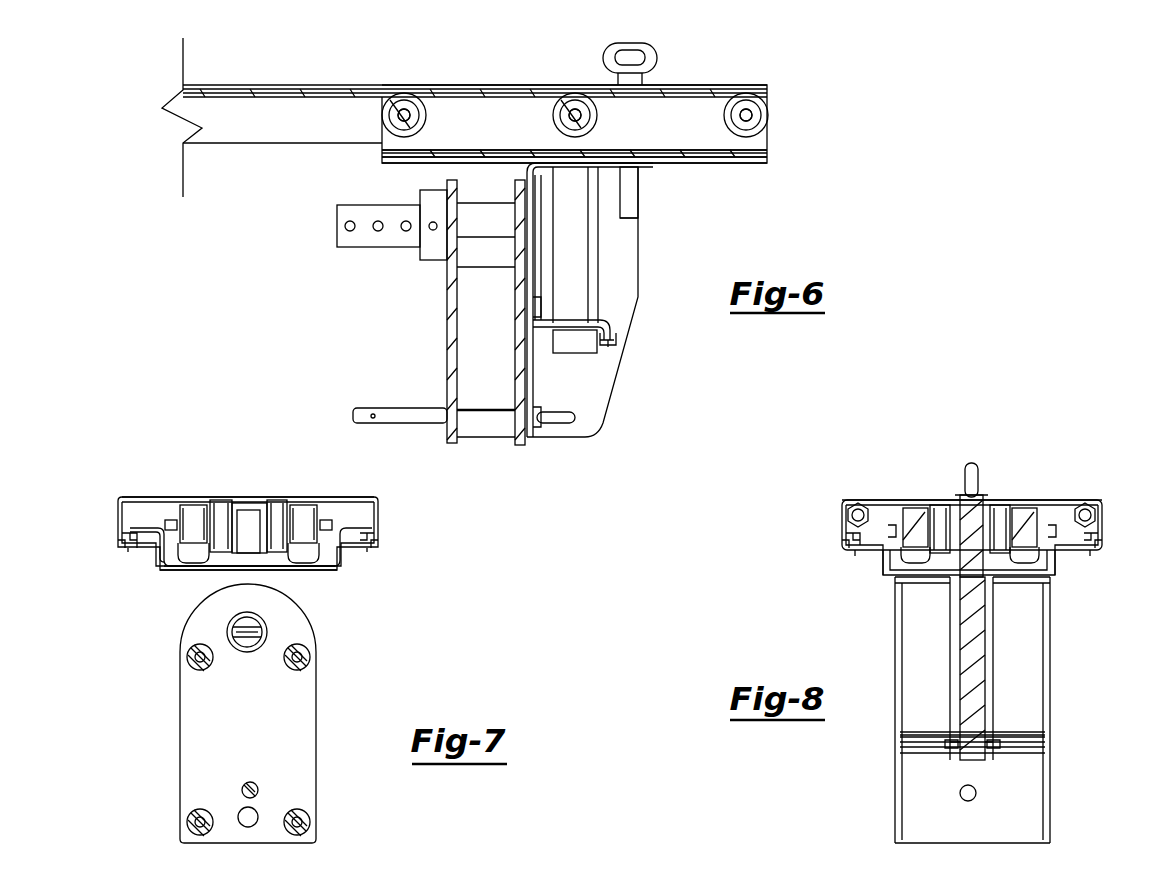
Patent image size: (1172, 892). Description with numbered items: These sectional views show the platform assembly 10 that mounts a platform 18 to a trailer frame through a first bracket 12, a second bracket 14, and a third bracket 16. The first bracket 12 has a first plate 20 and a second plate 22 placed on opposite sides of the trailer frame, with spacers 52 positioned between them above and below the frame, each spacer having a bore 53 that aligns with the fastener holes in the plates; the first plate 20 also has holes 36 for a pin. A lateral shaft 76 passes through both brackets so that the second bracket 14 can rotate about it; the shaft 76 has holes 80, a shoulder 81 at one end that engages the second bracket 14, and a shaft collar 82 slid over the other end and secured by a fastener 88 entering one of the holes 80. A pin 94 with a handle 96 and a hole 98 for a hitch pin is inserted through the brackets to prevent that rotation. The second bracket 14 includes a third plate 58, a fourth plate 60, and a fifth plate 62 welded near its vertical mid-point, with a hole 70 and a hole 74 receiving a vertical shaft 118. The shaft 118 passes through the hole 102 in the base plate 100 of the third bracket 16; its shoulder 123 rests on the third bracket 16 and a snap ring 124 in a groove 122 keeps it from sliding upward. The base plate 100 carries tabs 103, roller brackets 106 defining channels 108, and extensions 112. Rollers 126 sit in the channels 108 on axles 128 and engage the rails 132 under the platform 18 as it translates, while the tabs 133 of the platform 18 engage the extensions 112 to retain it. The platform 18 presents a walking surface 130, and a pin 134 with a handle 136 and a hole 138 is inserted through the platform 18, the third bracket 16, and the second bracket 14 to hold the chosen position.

In FIG. 6, the platform assembly 10 is at (485, 65).
In FIG. 7, the platform assembly 10 is at (178, 408).
In FIG. 8, the platform assembly 10 is at (1088, 410).
In FIG. 6, the first bracket 12 is at (415, 330).
In FIG. 7, the first bracket 12 is at (128, 740).
In FIG. 6, the second bracket 14 is at (622, 406).
In FIG. 8, the second bracket 14 is at (872, 786).
In FIG. 6, the third bracket 16 is at (778, 103).
In FIG. 7, the third bracket 16 is at (398, 503).
In FIG. 8, the third bracket 16 is at (1120, 510).
In FIG. 6, the platform 18 is at (305, 74).
In FIG. 7, the platform 18 is at (128, 470).
In FIG. 8, the platform 18 is at (873, 432).
In FIG. 6, the first plate 20 is at (452, 353).
In FIG. 7, the first plate 20 is at (305, 738).
In FIG. 6, the second plate 22 is at (515, 372).
In FIG. 7, the holes 36 is at (243, 808).
In FIG. 6, the spacers 52 is at (492, 258).
In FIG. 7, the spacers 52 is at (190, 650).
In FIG. 7, the bore 53 is at (200, 662).
In FIG. 8, the third plate 58 is at (895, 650).
In FIG. 8, the fourth plate 60 is at (1050, 695).
In FIG. 6, the fifth plate 62 is at (575, 328).
In FIG. 8, the fifth plate 62 is at (913, 732).
In FIG. 8, the hole 70 is at (978, 578).
In FIG. 8, the hole 74 is at (966, 735).
In FIG. 6, the shaft 76 is at (493, 215).
In FIG. 7, the shaft 76 is at (246, 642).
In FIG. 6, the holes 80 is at (350, 231).
In FIG. 6, the shoulder 81 is at (537, 190).
In FIG. 6, the shaft collar 82 is at (433, 230).
In FIG. 7, the fastener 88 is at (267, 632).
In FIG. 6, the pin 94 is at (382, 410).
In FIG. 7, the pin 94 is at (256, 783).
In FIG. 8, the pin 94 is at (965, 801).
In FIG. 6, the handle 96 is at (560, 416).
In FIG. 6, the hole 98 is at (372, 415).
In FIG. 7, the base plate 100 is at (295, 570).
In FIG. 8, the base plate 100 is at (886, 575).
In FIG. 8, the hole 102 is at (963, 582).
In FIG. 7, the tabs 103 is at (126, 536).
In FIG. 8, the tabs 103 is at (848, 540).
In FIG. 6, the roller brackets 106 is at (722, 143).
In FIG. 7, the roller brackets 106 is at (167, 553).
In FIG. 6, the channels 108 is at (740, 145).
In FIG. 7, the extensions 112 is at (120, 545).
In FIG. 8, the extensions 112 is at (845, 548).
In FIG. 6, the shaft 118 is at (588, 264).
In FIG. 8, the shaft 118 is at (987, 676).
In FIG. 8, the groove 122 is at (963, 750).
In FIG. 8, the shoulder 123 is at (1002, 565).
In FIG. 6, the snap ring 124 is at (608, 340).
In FIG. 8, the snap ring 124 is at (993, 748).
In FIG. 6, the rollers 126 is at (398, 100).
In FIG. 7, the rollers 126 is at (196, 515).
In FIG. 8, the rollers 126 is at (913, 508).
In FIG. 6, the axles 128 is at (400, 115).
In FIG. 7, the axles 128 is at (172, 522).
In FIG. 8, the axles 128 is at (890, 525).
In FIG. 6, the walking surface 130 is at (352, 85).
In FIG. 7, the walking surface 130 is at (255, 497).
In FIG. 7, the rails 132 is at (216, 504).
In FIG. 8, the rails 132 is at (937, 505).
In FIG. 7, the tabs 133 is at (131, 552).
In FIG. 8, the tabs 133 is at (855, 556).
In FIG. 6, the pin 134 is at (638, 185).
In FIG. 6, the handle 136 is at (657, 58).
In FIG. 8, the handle 136 is at (971, 465).
In FIG. 6, the hole 138 is at (632, 200).